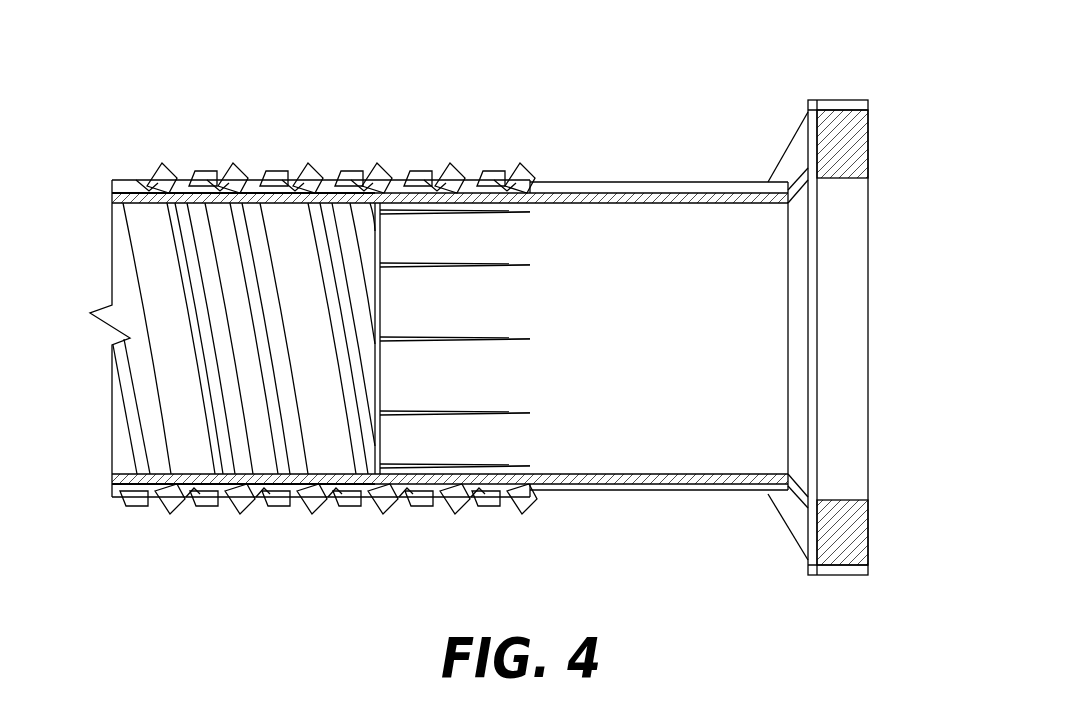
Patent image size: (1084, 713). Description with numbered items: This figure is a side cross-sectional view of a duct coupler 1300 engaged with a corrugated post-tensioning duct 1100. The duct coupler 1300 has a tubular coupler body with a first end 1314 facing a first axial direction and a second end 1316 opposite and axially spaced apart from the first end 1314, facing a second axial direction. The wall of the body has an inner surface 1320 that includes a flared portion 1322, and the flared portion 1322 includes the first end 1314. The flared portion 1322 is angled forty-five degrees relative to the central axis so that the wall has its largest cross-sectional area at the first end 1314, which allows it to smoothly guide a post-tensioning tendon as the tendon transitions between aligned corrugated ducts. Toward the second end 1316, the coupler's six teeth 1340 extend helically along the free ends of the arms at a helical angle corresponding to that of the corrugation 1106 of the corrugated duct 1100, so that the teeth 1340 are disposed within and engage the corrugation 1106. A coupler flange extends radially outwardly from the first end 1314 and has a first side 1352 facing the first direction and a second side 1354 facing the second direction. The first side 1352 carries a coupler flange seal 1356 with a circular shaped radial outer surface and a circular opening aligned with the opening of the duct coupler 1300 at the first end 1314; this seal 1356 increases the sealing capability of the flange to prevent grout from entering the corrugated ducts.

The corrugated post-tensioning duct 1100 is at (156, 182).
The corrugation 1106 is at (293, 187).
The duct coupler 1300 is at (883, 287).
The first end 1314 is at (753, 522).
The second end 1316 is at (540, 522).
The inner surface 1320 is at (705, 400).
The flared portion 1322 is at (804, 187).
The teeth 1340 is at (397, 508).
The first side 1352 is at (818, 130).
The second side 1354 is at (808, 547).
The coupler flange seal 1356 is at (870, 535).